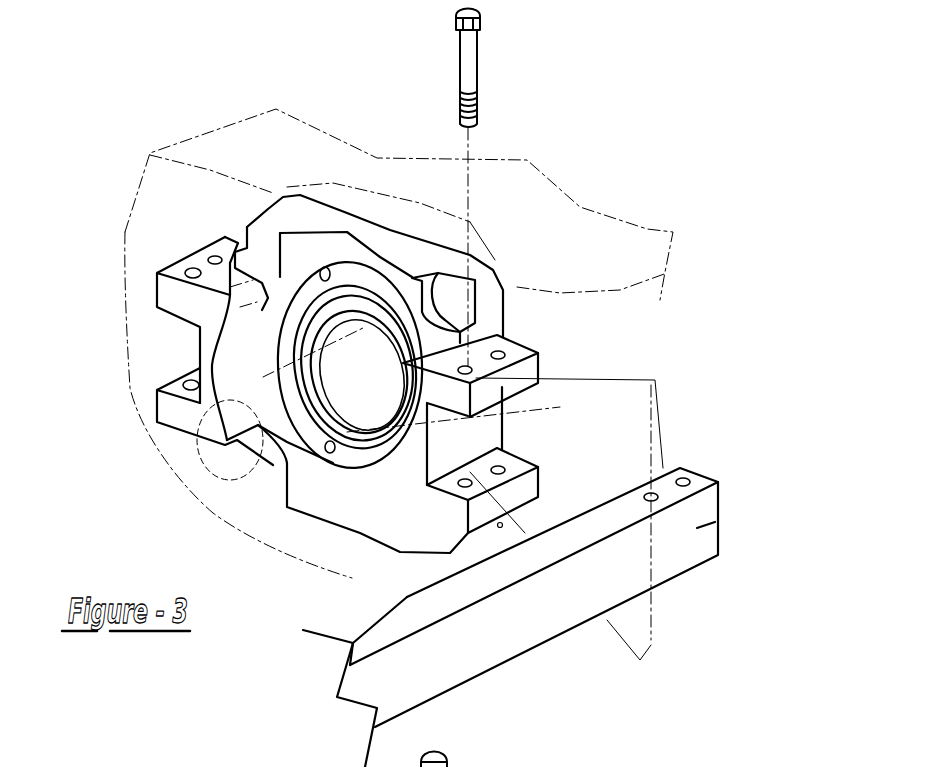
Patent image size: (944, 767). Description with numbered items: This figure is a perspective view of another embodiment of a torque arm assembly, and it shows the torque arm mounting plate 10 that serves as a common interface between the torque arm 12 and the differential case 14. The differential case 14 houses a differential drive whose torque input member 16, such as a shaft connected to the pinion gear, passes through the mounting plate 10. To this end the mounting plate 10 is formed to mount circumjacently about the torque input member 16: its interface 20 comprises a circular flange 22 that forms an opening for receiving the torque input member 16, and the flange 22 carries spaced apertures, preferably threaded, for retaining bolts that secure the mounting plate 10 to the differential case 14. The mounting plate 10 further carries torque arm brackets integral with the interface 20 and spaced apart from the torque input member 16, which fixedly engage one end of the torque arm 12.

The torque arm mounting plate 10 is at (359, 233).
The torque arm 12 is at (547, 613).
The differential case 14 is at (623, 245).
The torque input member 16 is at (697, 528).
The interface 20 is at (488, 438).
The circular flange 22 is at (467, 47).